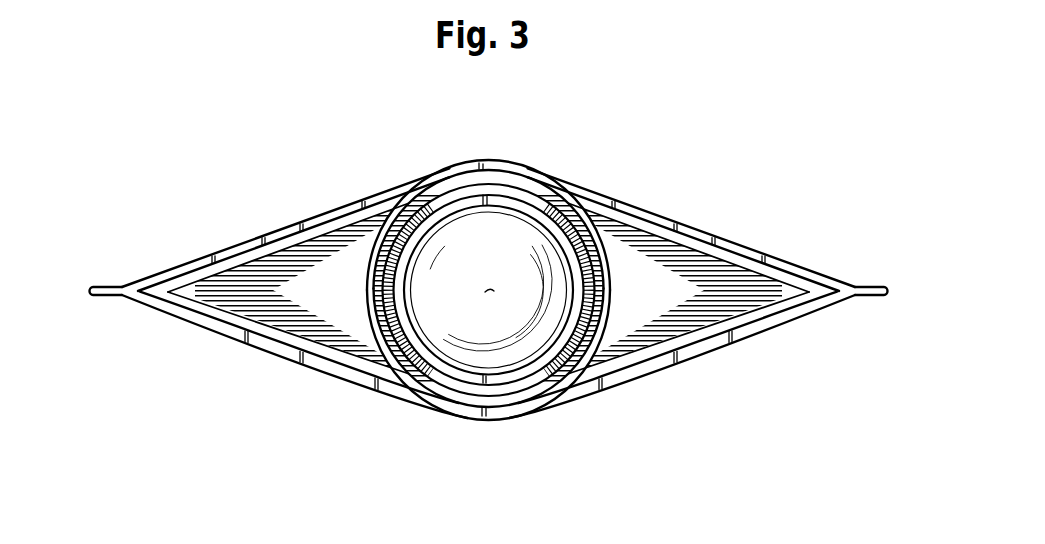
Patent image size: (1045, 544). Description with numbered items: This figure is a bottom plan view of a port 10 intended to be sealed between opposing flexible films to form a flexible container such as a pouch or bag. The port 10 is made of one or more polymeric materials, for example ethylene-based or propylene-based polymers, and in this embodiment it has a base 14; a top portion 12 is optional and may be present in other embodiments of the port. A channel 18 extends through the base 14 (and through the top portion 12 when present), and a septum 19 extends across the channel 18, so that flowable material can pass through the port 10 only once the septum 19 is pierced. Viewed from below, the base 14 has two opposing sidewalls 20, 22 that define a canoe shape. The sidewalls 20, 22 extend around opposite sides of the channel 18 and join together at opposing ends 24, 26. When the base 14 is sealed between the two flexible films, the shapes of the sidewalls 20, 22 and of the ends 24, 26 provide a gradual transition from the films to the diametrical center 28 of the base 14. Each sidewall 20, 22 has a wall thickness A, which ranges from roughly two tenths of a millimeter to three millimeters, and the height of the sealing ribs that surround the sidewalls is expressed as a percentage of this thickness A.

The port 10 is at (755, 137).
The top portion 12 is at (358, 148).
The base 14 is at (256, 375).
The channel 18 is at (500, 240).
The septum 19 is at (525, 345).
The sidewall 20 is at (298, 230).
The sidewall 22 is at (340, 374).
The end 24 is at (83, 299).
The end 26 is at (894, 299).
The diametrical center 28 is at (485, 292).
The wall thickness A is at (897, 279).